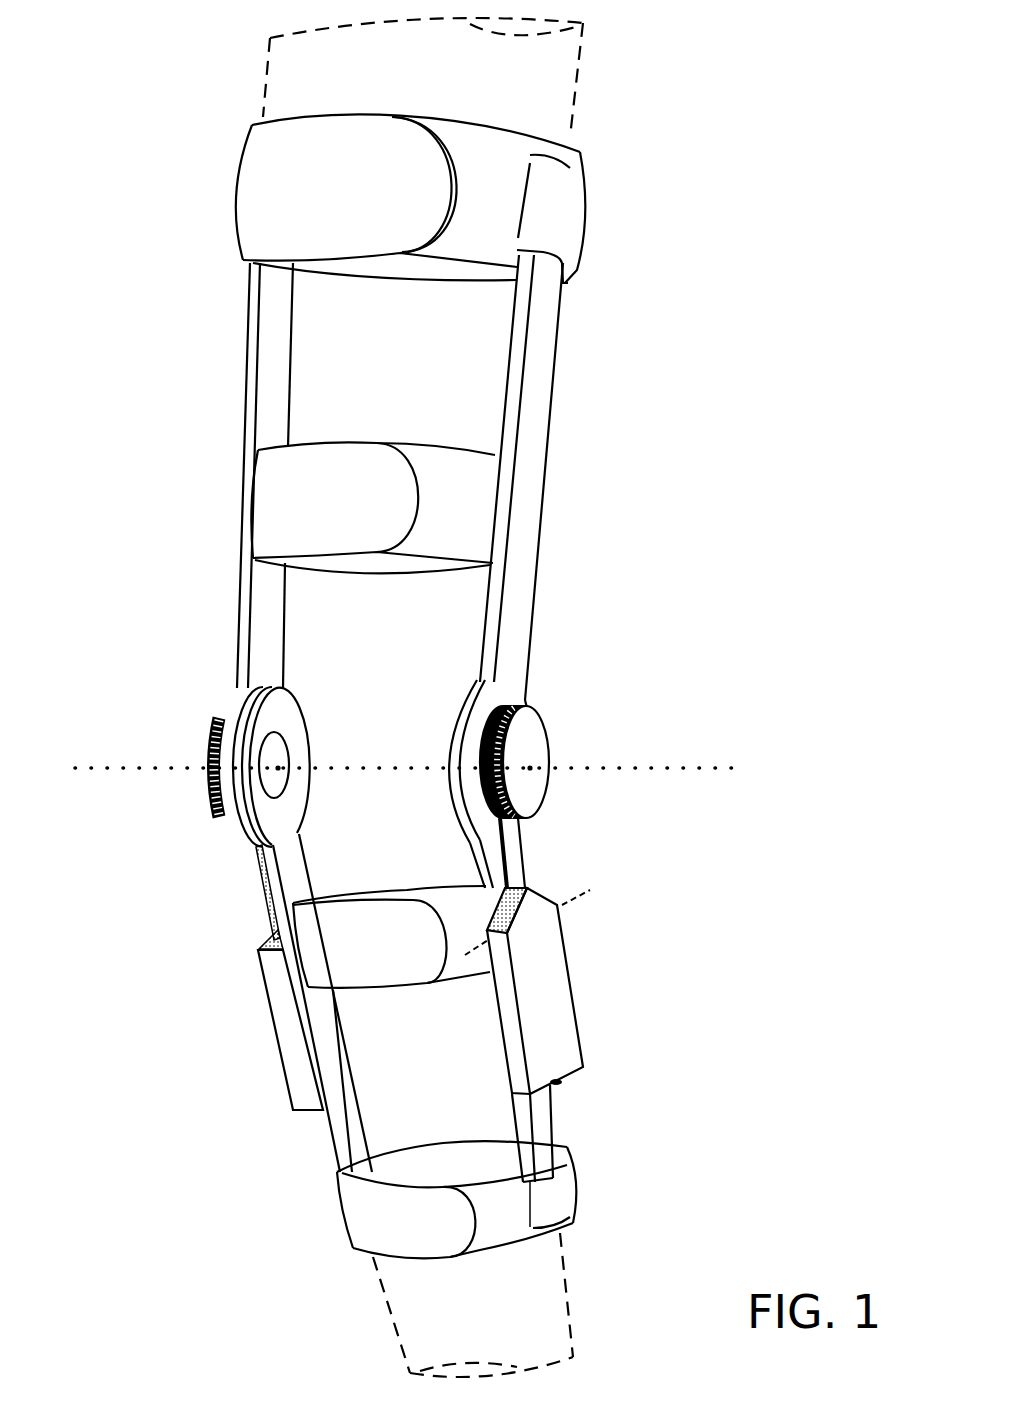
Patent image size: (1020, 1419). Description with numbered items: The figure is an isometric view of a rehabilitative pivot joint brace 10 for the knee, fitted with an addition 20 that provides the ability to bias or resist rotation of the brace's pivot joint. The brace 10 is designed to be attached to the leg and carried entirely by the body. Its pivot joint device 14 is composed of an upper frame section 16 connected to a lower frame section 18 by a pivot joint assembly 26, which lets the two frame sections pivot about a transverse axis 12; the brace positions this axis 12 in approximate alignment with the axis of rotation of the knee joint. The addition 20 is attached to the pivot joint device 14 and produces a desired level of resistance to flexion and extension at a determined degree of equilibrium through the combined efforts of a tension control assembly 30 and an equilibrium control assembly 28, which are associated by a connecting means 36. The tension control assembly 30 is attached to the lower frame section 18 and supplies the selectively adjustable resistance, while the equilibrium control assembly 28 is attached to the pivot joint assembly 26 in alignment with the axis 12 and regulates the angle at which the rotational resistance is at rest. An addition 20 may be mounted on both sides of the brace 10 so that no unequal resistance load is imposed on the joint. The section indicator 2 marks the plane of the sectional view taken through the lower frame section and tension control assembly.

The rehabilitative pivot joint brace 10 is at (842, 198).
The transverse axis 12 is at (705, 770).
The pivot joint device 14 is at (713, 618).
The upper frame section 16 is at (533, 430).
The lower frame section 18 is at (547, 1142).
The addition 20 is at (633, 888).
The pivot joint assembly 26 is at (435, 710).
The equilibrium control assembly 28 is at (555, 723).
The tension control assembly 30 is at (590, 1030).
The connecting means 36 is at (518, 845).
The section line 2- 2 is at (580, 933).